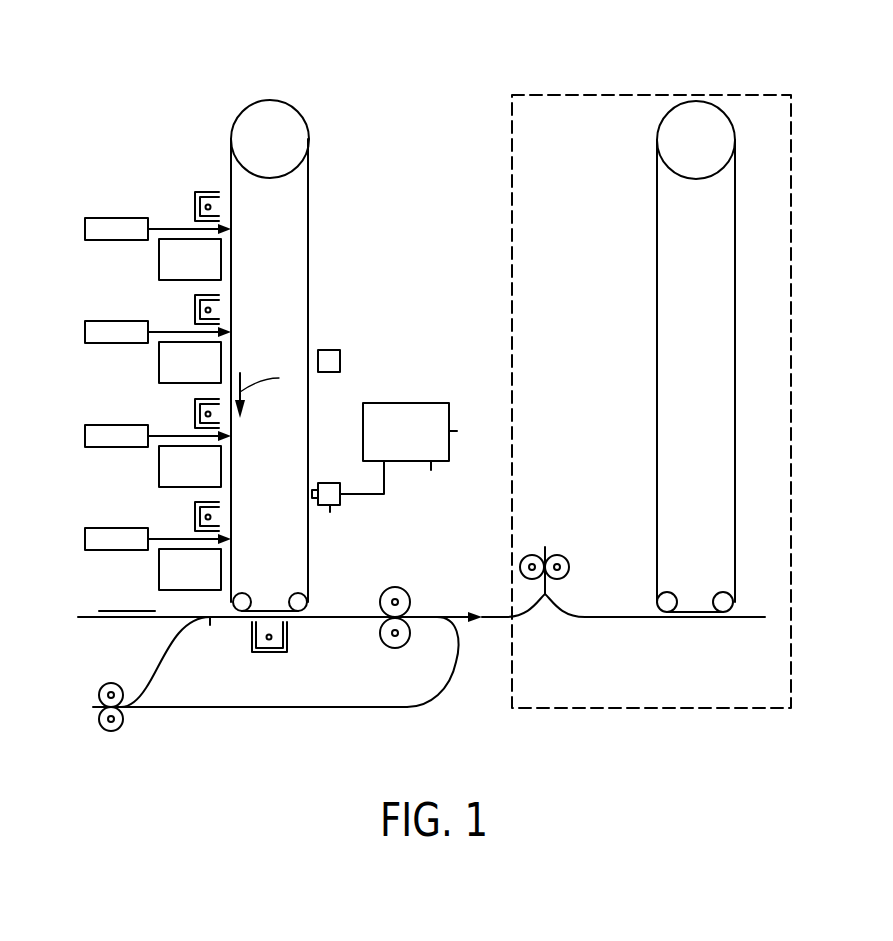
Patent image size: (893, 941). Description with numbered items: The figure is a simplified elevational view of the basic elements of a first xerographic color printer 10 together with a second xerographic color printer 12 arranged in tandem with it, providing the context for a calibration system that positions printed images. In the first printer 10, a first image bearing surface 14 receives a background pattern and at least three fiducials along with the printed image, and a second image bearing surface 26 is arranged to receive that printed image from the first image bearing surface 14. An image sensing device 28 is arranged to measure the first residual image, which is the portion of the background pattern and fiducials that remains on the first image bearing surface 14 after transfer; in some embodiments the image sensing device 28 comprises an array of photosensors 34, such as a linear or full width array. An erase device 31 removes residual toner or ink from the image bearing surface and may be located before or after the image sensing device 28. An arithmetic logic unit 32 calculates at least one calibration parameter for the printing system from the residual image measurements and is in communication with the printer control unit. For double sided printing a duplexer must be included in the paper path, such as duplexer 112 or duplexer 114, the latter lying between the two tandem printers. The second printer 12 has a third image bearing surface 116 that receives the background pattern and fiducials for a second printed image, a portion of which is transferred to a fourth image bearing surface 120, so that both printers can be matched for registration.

The first xerographic color printer 10 is at (298, 74).
The second xerographic color printer 12 is at (666, 75).
The image bearing surface 14 is at (308, 308).
The second image bearing surface 26 is at (114, 602).
The image sensing device 28 is at (330, 512).
The erase device 31 is at (330, 360).
The arithmetic logic unit 32 is at (432, 403).
The array of photosensors 34 is at (318, 483).
The duplexer 112 is at (105, 736).
The duplexer 114 is at (558, 539).
The third image bearing surface 116 is at (657, 247).
The fourth image bearing surface 120 is at (114, 621).